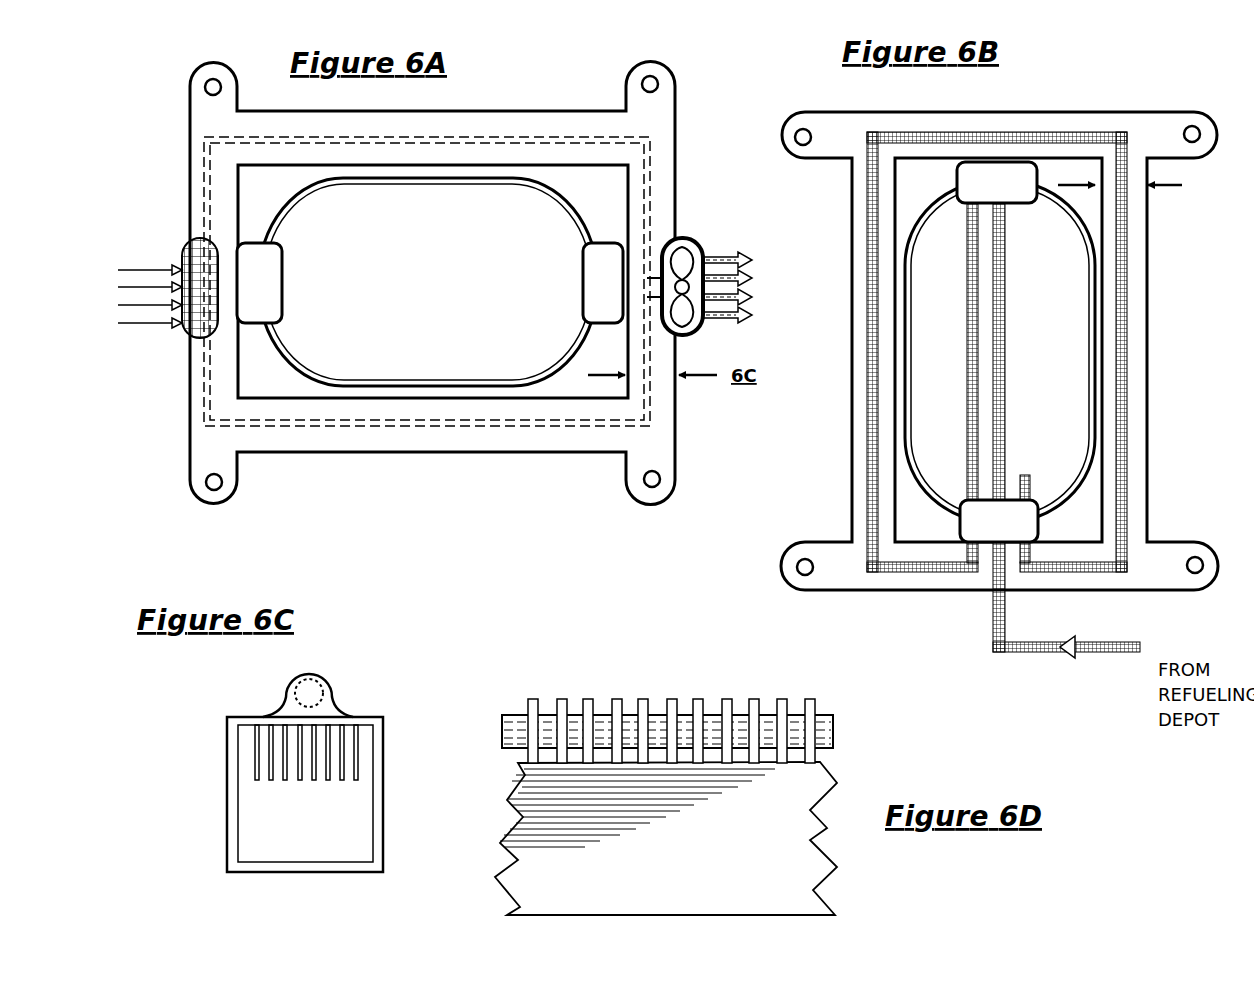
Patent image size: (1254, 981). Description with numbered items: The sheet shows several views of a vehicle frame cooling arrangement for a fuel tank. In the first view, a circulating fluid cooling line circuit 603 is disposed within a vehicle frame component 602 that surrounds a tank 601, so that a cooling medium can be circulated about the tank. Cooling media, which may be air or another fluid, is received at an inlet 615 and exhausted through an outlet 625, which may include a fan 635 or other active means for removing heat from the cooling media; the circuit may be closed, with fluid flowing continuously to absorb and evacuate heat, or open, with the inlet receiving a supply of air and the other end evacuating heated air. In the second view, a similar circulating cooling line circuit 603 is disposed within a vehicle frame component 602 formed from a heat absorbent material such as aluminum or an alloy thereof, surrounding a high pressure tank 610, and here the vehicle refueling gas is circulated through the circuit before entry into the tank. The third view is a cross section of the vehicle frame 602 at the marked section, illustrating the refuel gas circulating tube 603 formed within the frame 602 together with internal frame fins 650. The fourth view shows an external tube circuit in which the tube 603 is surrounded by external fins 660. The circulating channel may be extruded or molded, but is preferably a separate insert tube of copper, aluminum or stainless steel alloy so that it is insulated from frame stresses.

In FIG. 6A, the tank 601 is at (432, 386).
In FIG. 6A, the vehicle frame component 602 is at (551, 110).
In FIG. 6B, the vehicle frame component 602 is at (1147, 111).
In FIG. 6C, the vehicle frame component 602 is at (228, 818).
In FIG. 6D, the vehicle frame component 602 is at (828, 794).
In FIG. 6A, the circulating fluid cooling line circuit 603 is at (538, 425).
In FIG. 6B, the circulating fluid cooling line circuit 603 is at (923, 573).
In FIG. 6C, the circulating fluid cooling line circuit 603 is at (309, 693).
In FIG. 6D, the circulating fluid cooling line circuit 603 is at (835, 731).
In FIG. 6B, the high pressure tank 610 is at (1006, 402).
In FIG. 6A, the inlet 615 is at (143, 252).
In FIG. 6A, the outlet 625 is at (764, 288).
In FIG. 6A, the fan 635 is at (684, 258).
In FIG. 6C, the internal frame fins 650 is at (311, 782).
In FIG. 6D, the external fins 660 is at (616, 718).